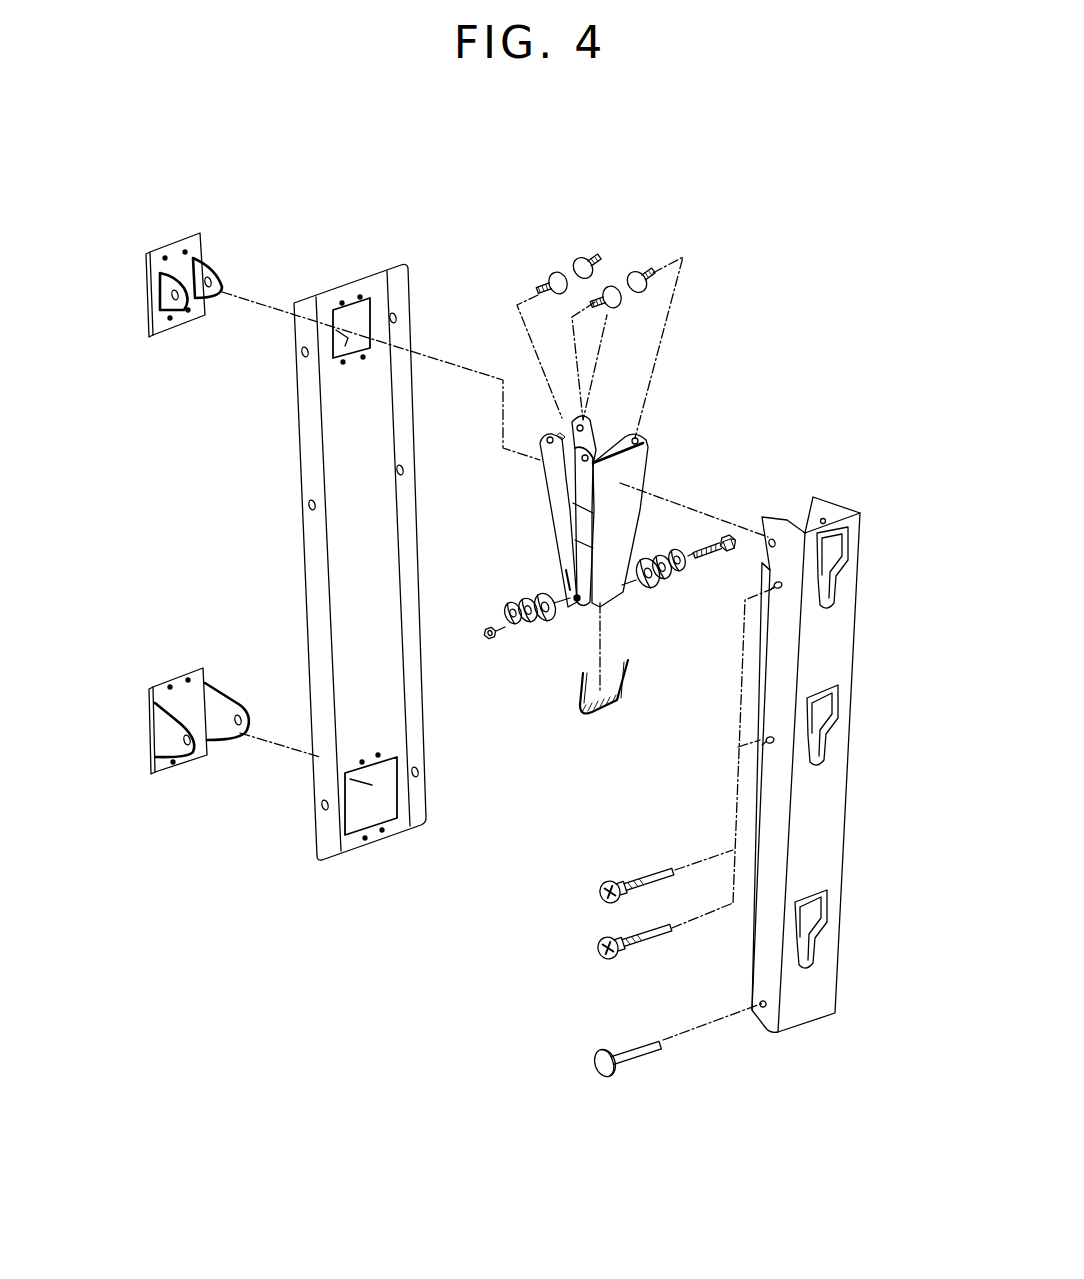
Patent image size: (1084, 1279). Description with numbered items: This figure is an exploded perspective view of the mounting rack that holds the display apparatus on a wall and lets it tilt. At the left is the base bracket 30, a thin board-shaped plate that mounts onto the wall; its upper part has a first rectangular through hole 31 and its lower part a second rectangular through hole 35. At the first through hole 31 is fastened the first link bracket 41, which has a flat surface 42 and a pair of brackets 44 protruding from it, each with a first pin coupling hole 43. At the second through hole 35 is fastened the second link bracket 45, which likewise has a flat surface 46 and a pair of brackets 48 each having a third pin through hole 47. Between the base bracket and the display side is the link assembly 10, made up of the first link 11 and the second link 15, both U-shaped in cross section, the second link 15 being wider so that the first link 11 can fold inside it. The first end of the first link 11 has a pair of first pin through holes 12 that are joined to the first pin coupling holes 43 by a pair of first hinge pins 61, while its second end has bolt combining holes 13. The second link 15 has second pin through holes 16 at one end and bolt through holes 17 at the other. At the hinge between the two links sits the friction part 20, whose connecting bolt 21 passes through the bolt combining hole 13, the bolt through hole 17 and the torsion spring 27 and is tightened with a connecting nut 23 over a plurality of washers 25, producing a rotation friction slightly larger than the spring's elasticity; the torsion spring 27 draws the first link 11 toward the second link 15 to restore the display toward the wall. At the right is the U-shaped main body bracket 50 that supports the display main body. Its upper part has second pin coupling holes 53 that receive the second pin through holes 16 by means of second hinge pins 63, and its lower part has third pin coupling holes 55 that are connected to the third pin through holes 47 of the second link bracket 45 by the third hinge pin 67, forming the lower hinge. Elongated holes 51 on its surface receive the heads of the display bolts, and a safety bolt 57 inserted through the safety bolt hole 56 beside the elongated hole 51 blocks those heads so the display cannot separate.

The link assembly 10 is at (626, 463).
The first link 11 is at (598, 482).
The first pin through hole 12 is at (546, 432).
The bolt combining hole 13 is at (573, 598).
The second link 15 is at (648, 434).
The second pin through hole 16 is at (595, 470).
The bolt through hole 17 is at (568, 582).
The friction part 20 is at (609, 660).
The connecting bolt 21 is at (711, 556).
The connecting nut 23 is at (493, 640).
The washers 25 is at (683, 557).
The torsion spring 27 is at (626, 676).
The base bracket 30 is at (359, 546).
The first rectangular through hole 31 is at (333, 358).
The second rectangular through hole 35 is at (372, 807).
The first link bracket 41 is at (160, 302).
The flat surface 42 is at (209, 283).
The first pin coupling hole 43 is at (172, 290).
The brackets 44 is at (216, 270).
The second link bracket 45 is at (169, 731).
The flat surface 46 is at (177, 690).
The third pin through hole 47 is at (190, 745).
The brackets 48 is at (240, 703).
The main body bracket 50 is at (810, 749).
The elongated holes 51 is at (817, 917).
The second pin coupling hole 53 is at (824, 520).
The third pin coupling hole 55 is at (763, 1010).
The safety bolt hole 56 is at (774, 588).
The safety bolt 57 is at (595, 953).
The first hinge pins 61 is at (604, 286).
The second hinge pins 63 is at (594, 257).
The third hinge pin 67 is at (632, 1057).